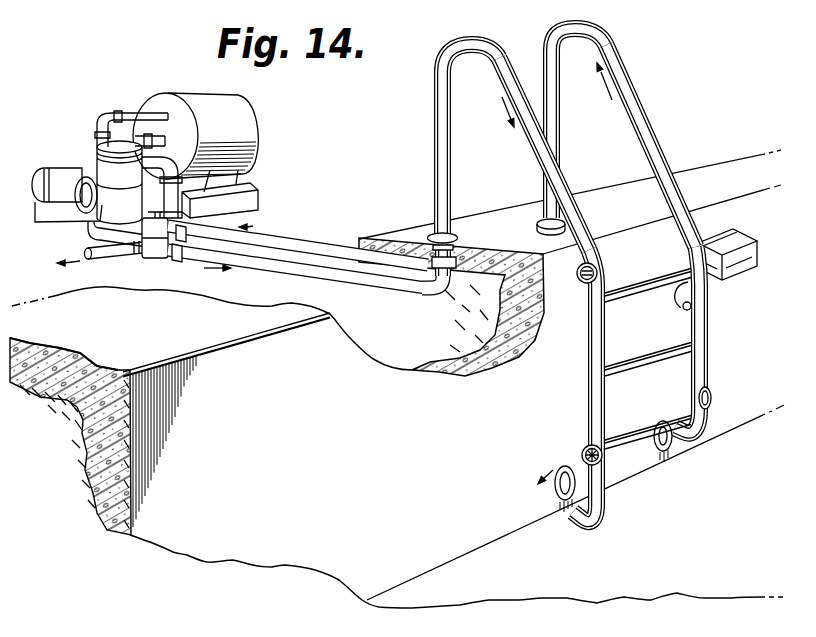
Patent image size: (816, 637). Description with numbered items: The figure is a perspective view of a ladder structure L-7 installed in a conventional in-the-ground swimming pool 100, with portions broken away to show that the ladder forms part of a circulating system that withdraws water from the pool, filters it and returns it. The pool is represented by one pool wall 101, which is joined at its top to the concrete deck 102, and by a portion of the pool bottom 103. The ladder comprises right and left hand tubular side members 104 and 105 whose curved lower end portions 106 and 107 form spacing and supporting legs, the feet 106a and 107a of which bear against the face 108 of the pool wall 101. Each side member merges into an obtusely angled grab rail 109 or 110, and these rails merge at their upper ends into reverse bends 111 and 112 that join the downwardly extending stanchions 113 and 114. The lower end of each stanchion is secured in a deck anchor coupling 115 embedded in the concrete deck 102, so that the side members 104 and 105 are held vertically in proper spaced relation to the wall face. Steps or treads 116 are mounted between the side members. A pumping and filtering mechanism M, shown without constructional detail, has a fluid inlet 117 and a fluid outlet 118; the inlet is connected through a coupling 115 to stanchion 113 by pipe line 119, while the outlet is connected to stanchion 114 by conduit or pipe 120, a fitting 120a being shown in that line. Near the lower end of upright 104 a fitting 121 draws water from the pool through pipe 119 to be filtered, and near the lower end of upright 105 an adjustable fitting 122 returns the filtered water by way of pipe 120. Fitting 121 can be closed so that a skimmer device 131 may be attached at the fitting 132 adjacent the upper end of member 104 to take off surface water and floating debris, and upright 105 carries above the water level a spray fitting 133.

The pumping and filtering mechanism M is at (151, 80).
The ladder structure L-7 is at (572, 276).
The swimming pool 100 is at (727, 156).
The pool wall 101 is at (103, 531).
The concrete deck 102 is at (58, 305).
The pool bottom 103 is at (684, 587).
The right hand tubular side member 104 is at (708, 343).
The left hand tubular side member 105 is at (588, 393).
The lower end portion 106 is at (690, 439).
The foot 106a is at (665, 452).
The lower end portion 107 is at (600, 494).
The foot 107a is at (562, 507).
The face of the pool wall 108 is at (187, 551).
The grab rail 109 is at (637, 92).
The grab rail 110 is at (531, 145).
The reverse bend 111 is at (556, 31).
The reverse bend 112 is at (451, 42).
The stanchion 113 is at (561, 134).
The stanchion 114 is at (433, 117).
The deck anchor coupling 115 is at (537, 224).
The steps or treads 116 is at (651, 260).
The fluid inlet 117 is at (100, 162).
The fluid outlet 118 is at (255, 233).
The pipe line 119 is at (300, 238).
The conduit or pipe 120 is at (247, 272).
The valve fitting 120a is at (143, 258).
The fitting 121 is at (744, 387).
The adjustable fitting 122 is at (582, 452).
The skimmer device 131 is at (736, 221).
The fitting 132 is at (685, 308).
The spray fitting 133 is at (574, 284).